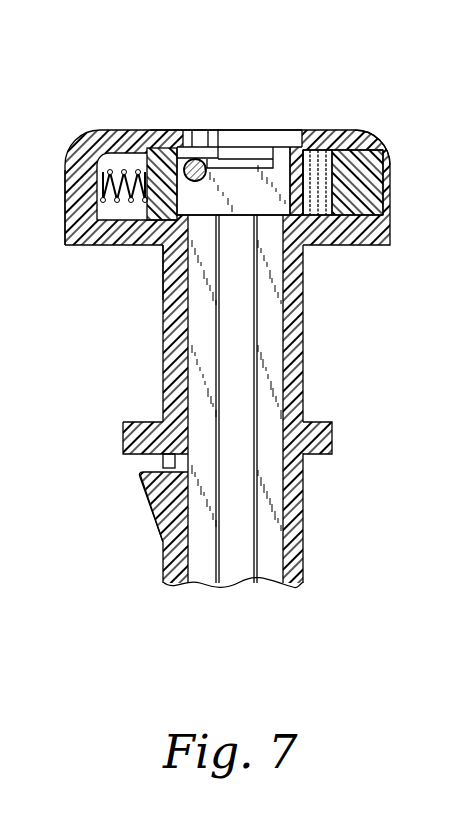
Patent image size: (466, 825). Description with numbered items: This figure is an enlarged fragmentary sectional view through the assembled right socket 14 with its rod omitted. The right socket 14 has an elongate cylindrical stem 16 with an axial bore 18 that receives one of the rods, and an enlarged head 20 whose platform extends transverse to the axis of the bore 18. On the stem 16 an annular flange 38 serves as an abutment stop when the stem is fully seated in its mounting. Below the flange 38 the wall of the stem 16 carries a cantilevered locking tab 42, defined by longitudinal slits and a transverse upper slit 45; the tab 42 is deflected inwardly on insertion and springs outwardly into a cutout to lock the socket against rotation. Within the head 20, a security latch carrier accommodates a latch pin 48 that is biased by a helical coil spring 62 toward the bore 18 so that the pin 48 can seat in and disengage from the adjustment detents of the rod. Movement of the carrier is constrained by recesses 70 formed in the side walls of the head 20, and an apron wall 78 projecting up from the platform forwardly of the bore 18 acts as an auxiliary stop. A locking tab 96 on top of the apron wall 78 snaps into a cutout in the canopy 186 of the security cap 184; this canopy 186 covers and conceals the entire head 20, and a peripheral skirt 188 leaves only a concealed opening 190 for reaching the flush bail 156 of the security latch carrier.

The right socket 14 is at (157, 518).
The stem 16 is at (163, 328).
The axial bore 18 is at (242, 347).
The enlarged head 20 is at (151, 266).
The annular flange 38 is at (325, 432).
The cantilevered locking tab 42 is at (152, 492).
The transverse upper slit 45 is at (172, 463).
The latch pin 48 is at (212, 146).
The helical coil spring 62 is at (90, 143).
The registered recesses 70 is at (243, 155).
The apron wall 78 is at (307, 208).
The locking tab 96 is at (298, 148).
The bail 156 is at (362, 212).
The security cap 184 is at (148, 124).
The canopy 186 is at (170, 126).
The peripheral skirt 188 is at (65, 168).
The concealed opening 190 is at (390, 160).